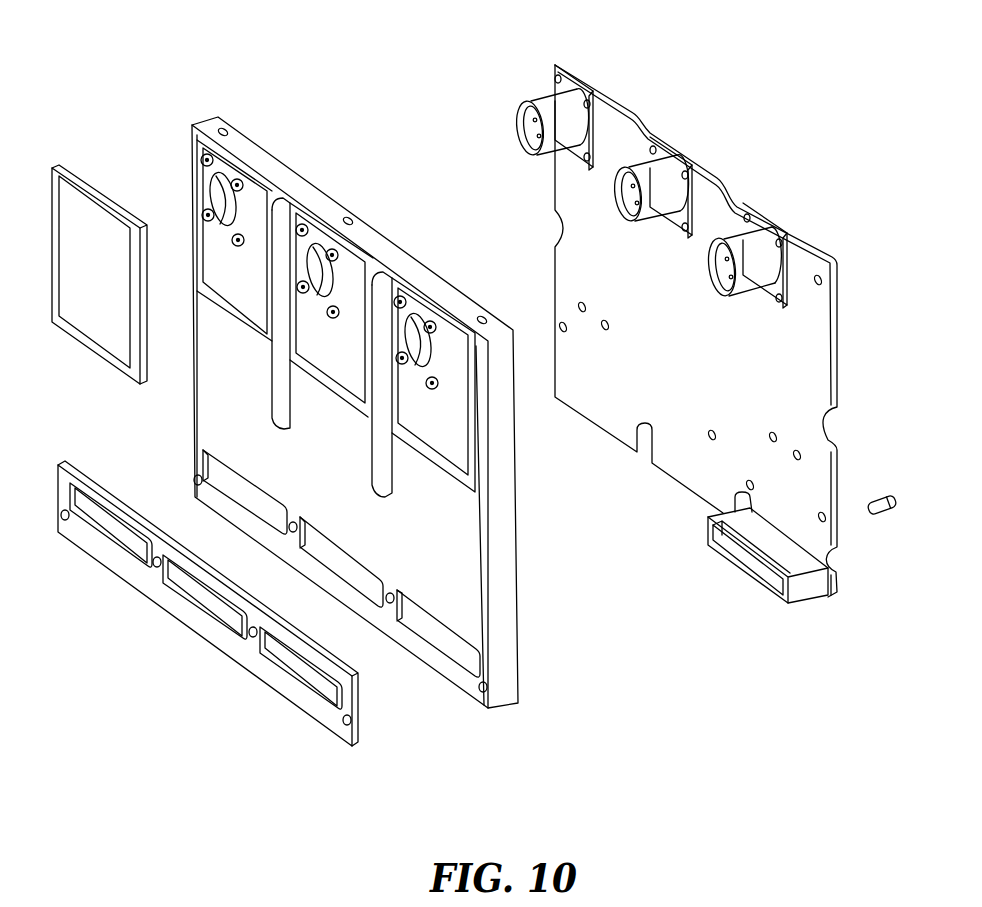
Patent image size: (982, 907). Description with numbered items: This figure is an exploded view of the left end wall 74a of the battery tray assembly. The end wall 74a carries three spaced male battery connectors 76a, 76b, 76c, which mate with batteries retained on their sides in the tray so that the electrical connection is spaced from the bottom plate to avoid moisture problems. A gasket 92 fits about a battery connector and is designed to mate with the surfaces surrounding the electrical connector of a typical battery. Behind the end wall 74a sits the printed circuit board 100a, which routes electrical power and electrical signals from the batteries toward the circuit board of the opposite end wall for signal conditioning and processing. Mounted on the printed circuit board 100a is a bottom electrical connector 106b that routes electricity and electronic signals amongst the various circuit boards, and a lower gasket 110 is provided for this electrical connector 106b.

The left end wall 74a is at (340, 100).
The gasket 92 is at (102, 198).
The lower gasket 110 is at (261, 666).
The printed circuit board 100a is at (697, 450).
The male battery connector 76a is at (707, 272).
The male battery connector 76b is at (617, 195).
The male battery connector 76c is at (517, 110).
The electrical connector 106b is at (808, 582).